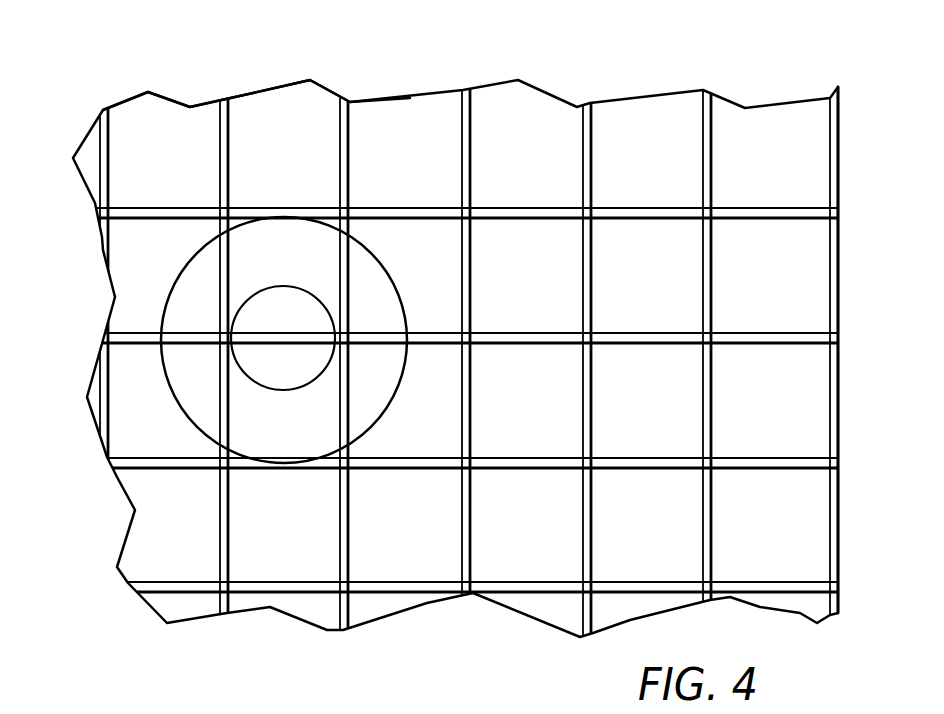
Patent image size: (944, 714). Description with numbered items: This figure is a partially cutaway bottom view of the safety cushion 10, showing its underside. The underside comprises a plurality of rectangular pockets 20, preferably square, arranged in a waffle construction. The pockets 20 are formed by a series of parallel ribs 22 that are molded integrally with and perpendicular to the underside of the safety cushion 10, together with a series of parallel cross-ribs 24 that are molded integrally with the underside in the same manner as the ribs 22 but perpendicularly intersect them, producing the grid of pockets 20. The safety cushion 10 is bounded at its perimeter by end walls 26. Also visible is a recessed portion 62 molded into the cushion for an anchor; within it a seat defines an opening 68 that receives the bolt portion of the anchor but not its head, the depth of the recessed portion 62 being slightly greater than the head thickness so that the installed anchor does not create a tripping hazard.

The safety cushion 10 is at (699, 72).
The rectangular pockets 20 is at (388, 113).
The ribs 22 is at (577, 367).
The cross-ribs 24 is at (660, 347).
The end walls 26 is at (840, 247).
The recessed portion 62 is at (385, 300).
The opening 68 is at (263, 317).